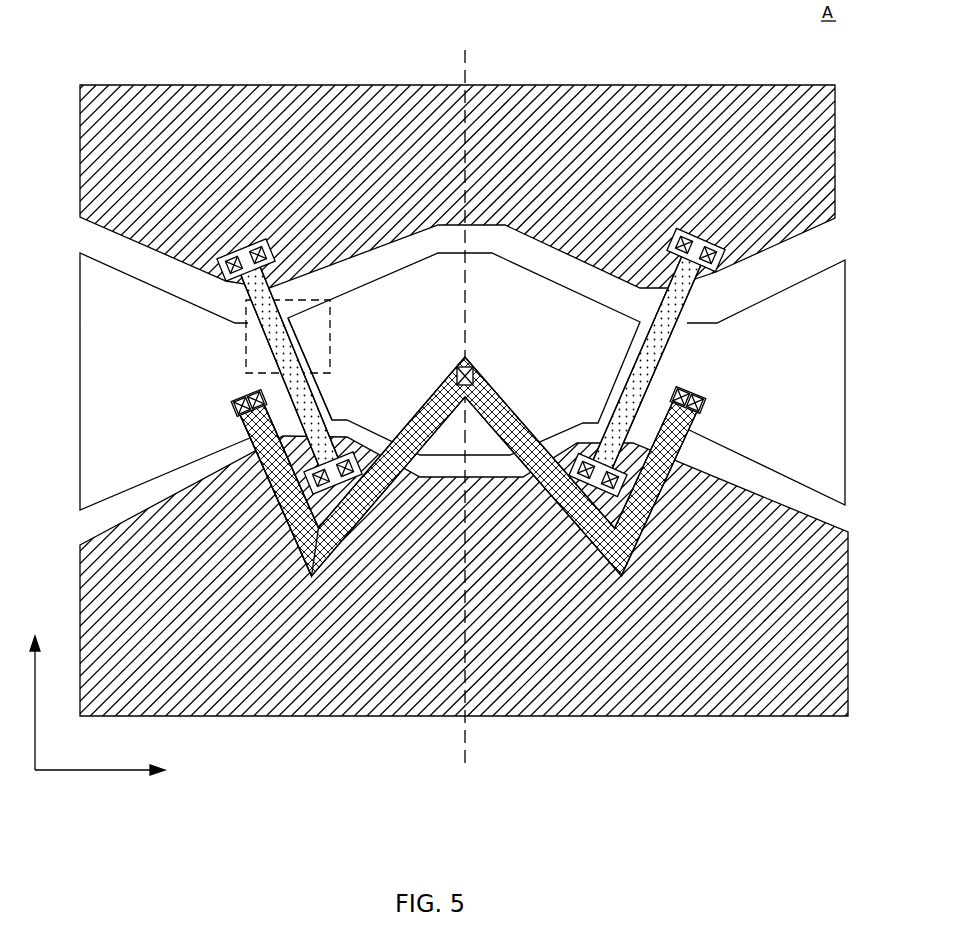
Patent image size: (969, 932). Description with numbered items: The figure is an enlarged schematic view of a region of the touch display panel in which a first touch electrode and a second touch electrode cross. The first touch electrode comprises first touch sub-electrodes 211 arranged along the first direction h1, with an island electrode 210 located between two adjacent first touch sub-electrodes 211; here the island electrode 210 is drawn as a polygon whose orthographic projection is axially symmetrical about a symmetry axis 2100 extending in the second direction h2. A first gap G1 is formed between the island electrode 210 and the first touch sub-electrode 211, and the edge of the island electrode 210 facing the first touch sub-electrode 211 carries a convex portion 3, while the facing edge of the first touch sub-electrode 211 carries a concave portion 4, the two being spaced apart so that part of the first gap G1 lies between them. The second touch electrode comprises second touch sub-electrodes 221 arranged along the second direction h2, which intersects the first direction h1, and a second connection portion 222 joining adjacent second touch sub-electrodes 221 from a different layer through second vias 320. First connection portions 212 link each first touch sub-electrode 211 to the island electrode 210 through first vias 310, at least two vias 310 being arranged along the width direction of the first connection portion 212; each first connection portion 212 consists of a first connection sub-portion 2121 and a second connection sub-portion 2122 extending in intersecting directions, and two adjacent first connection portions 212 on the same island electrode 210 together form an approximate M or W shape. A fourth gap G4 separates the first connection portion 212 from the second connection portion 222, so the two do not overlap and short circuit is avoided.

The second touch sub-electrode 221 is at (333, 195).
The island electrode 210 is at (533, 320).
The symmetry axis 2100 is at (465, 50).
The first touch sub-electrode 211 is at (110, 278).
The first connection portion 212 is at (362, 567).
The first connection sub-portion 2121 is at (360, 481).
The second connection sub-portion 2122 is at (395, 462).
The second connection portion 222 is at (192, 335).
The second via 320 is at (217, 260).
The first via 310 is at (242, 412).
The convex portion 3 is at (285, 348).
The concave portion 4 is at (248, 328).
The first gap G1 is at (670, 348).
The fourth gap G4 is at (325, 560).
The first direction h1 is at (115, 772).
The second direction h2 is at (29, 691).